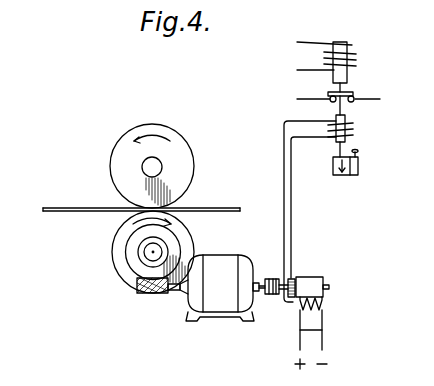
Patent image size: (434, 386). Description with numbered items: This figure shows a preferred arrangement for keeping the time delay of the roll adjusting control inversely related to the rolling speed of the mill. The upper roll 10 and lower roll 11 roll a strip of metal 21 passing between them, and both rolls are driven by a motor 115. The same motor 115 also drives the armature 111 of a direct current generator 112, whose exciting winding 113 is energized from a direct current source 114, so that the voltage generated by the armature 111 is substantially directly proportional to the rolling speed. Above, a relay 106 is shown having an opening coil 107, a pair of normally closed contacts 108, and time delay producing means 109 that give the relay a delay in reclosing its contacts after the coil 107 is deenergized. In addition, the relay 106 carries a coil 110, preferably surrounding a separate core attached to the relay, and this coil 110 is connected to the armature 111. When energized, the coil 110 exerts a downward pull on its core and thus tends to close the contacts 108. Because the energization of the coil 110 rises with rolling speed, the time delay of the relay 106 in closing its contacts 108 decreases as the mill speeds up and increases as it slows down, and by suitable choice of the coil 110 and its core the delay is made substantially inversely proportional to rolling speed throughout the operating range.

The upper roll 10 is at (175, 130).
The lower roll 11 is at (113, 262).
The strip of metal 21 is at (208, 208).
The motor 115 is at (234, 288).
The direct current generator 112 is at (320, 267).
The armature 111 is at (323, 279).
The exciting winding 113 is at (323, 303).
The direct current source 114 is at (322, 332).
The opening coil 107 is at (348, 55).
The relay 106 is at (389, 81).
The normally closed contacts 108 is at (331, 102).
The coil 110 is at (351, 132).
The time delay producing means 109 is at (333, 171).